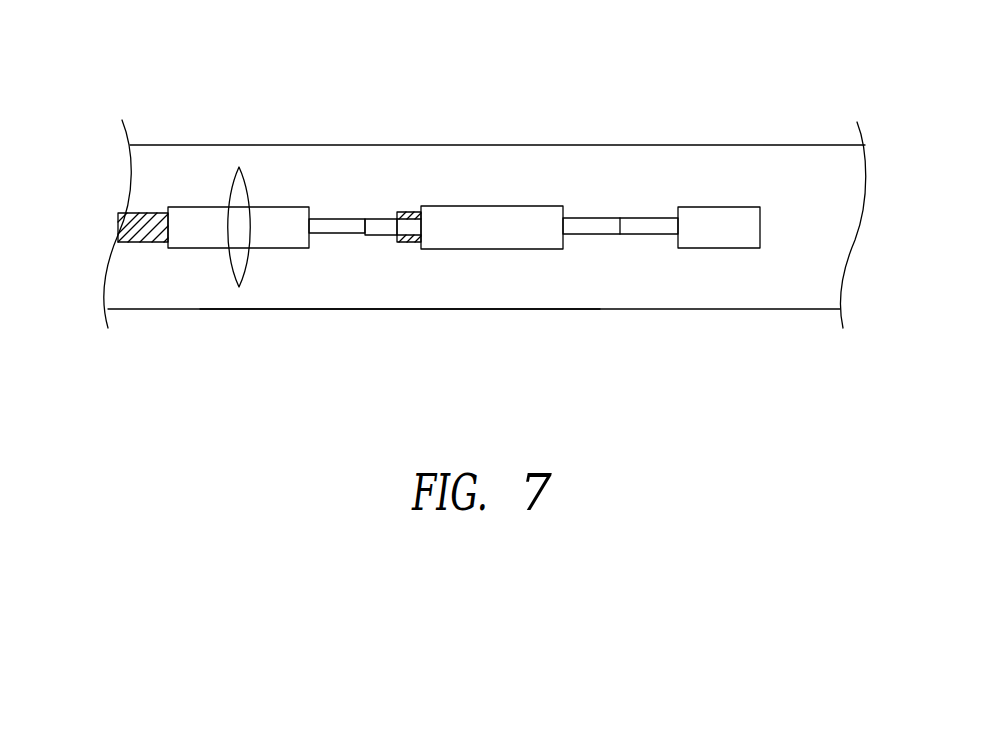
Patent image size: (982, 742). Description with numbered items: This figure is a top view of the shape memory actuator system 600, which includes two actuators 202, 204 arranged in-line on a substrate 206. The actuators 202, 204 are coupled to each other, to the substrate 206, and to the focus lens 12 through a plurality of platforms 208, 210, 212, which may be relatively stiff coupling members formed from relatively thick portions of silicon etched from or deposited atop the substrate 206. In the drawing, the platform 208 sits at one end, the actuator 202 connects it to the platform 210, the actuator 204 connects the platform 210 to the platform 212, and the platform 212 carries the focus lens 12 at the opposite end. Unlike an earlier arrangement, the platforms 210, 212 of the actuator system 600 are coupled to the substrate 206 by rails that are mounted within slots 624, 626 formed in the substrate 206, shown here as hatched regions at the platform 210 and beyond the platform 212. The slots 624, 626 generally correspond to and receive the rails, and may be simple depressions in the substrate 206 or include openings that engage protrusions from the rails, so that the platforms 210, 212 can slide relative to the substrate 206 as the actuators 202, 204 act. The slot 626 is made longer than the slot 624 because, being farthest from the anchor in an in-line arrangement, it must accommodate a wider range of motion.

The actuator system 600 is at (587, 82).
The substrate 206 is at (382, 283).
The slot 626 is at (148, 216).
The platform 212 is at (282, 204).
The focus lens 12 is at (240, 166).
The actuator 204 is at (380, 217).
The slot 624 is at (407, 242).
The platform 210 is at (545, 205).
The actuator 202 is at (637, 217).
The platform 208 is at (738, 206).